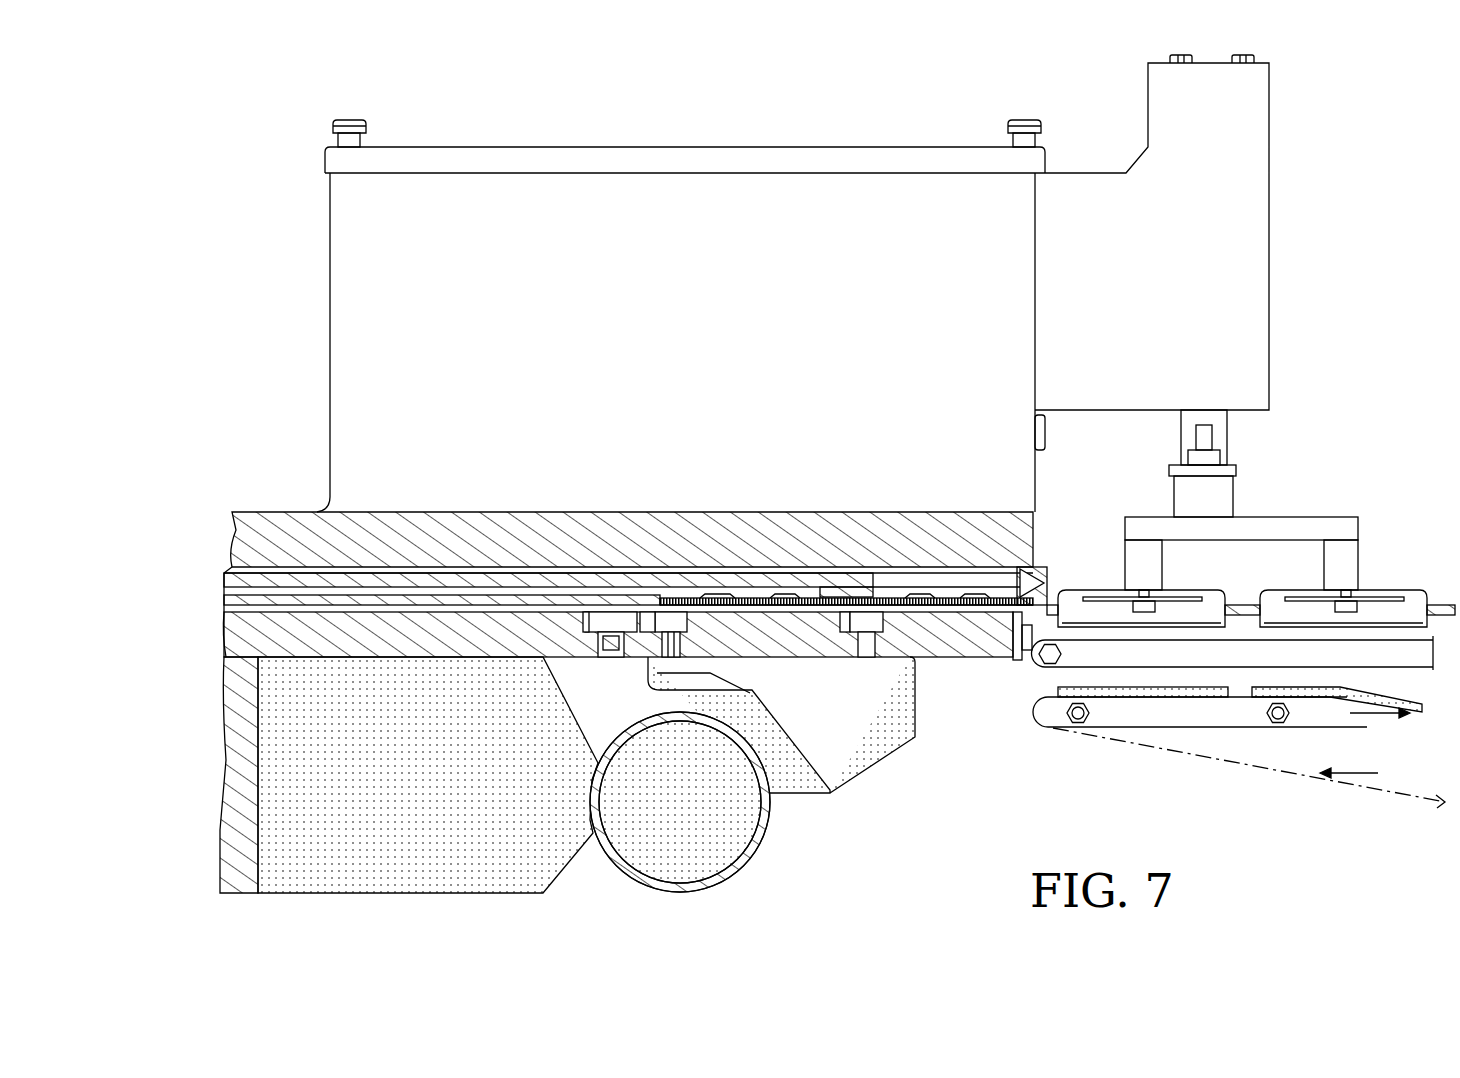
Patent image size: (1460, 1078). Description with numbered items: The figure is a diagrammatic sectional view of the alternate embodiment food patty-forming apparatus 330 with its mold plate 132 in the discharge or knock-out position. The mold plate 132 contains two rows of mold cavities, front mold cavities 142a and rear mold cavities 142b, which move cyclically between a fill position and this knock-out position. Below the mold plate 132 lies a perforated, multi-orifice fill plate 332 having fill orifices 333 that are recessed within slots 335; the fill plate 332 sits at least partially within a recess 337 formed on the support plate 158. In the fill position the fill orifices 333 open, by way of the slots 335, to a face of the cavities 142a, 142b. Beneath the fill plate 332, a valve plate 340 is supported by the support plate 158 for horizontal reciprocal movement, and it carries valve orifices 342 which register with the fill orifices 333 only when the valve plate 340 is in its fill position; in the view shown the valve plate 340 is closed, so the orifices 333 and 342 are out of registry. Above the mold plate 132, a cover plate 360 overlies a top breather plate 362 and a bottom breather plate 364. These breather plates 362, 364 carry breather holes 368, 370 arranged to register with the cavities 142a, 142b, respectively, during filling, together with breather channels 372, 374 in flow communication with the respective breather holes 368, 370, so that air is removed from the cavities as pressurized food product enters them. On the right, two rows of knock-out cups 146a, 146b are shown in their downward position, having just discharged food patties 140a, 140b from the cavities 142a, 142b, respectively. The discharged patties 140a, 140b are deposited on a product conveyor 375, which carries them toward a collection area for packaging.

The alternate embodiment apparatus 330 is at (1292, 285).
The breather channel 372 is at (322, 570).
The breather channel 374 is at (275, 587).
The support plate 158 is at (392, 610).
The cover plate 360 is at (413, 512).
The top breather plate 362 is at (232, 573).
The bottom breather plate 364 is at (232, 590).
The fill plate 332 is at (592, 610).
The mold plate 132 is at (668, 610).
The fill orifices 333 is at (675, 605).
The breather hole 368 is at (747, 582).
The valve plate 340 is at (840, 610).
The breather hole 370 is at (950, 585).
The recess 337 is at (595, 655).
The slots 335 is at (665, 640).
The valve orifices 342 is at (868, 640).
The knock-out cups 146b is at (1115, 590).
The rear mold cavities 142b is at (1080, 590).
The front mold cavities 142a is at (1277, 597).
The knock-out cups 146a is at (1373, 590).
The food patties 140b is at (1065, 692).
The food patties 140a is at (1413, 706).
The product conveyor 375 is at (1370, 790).